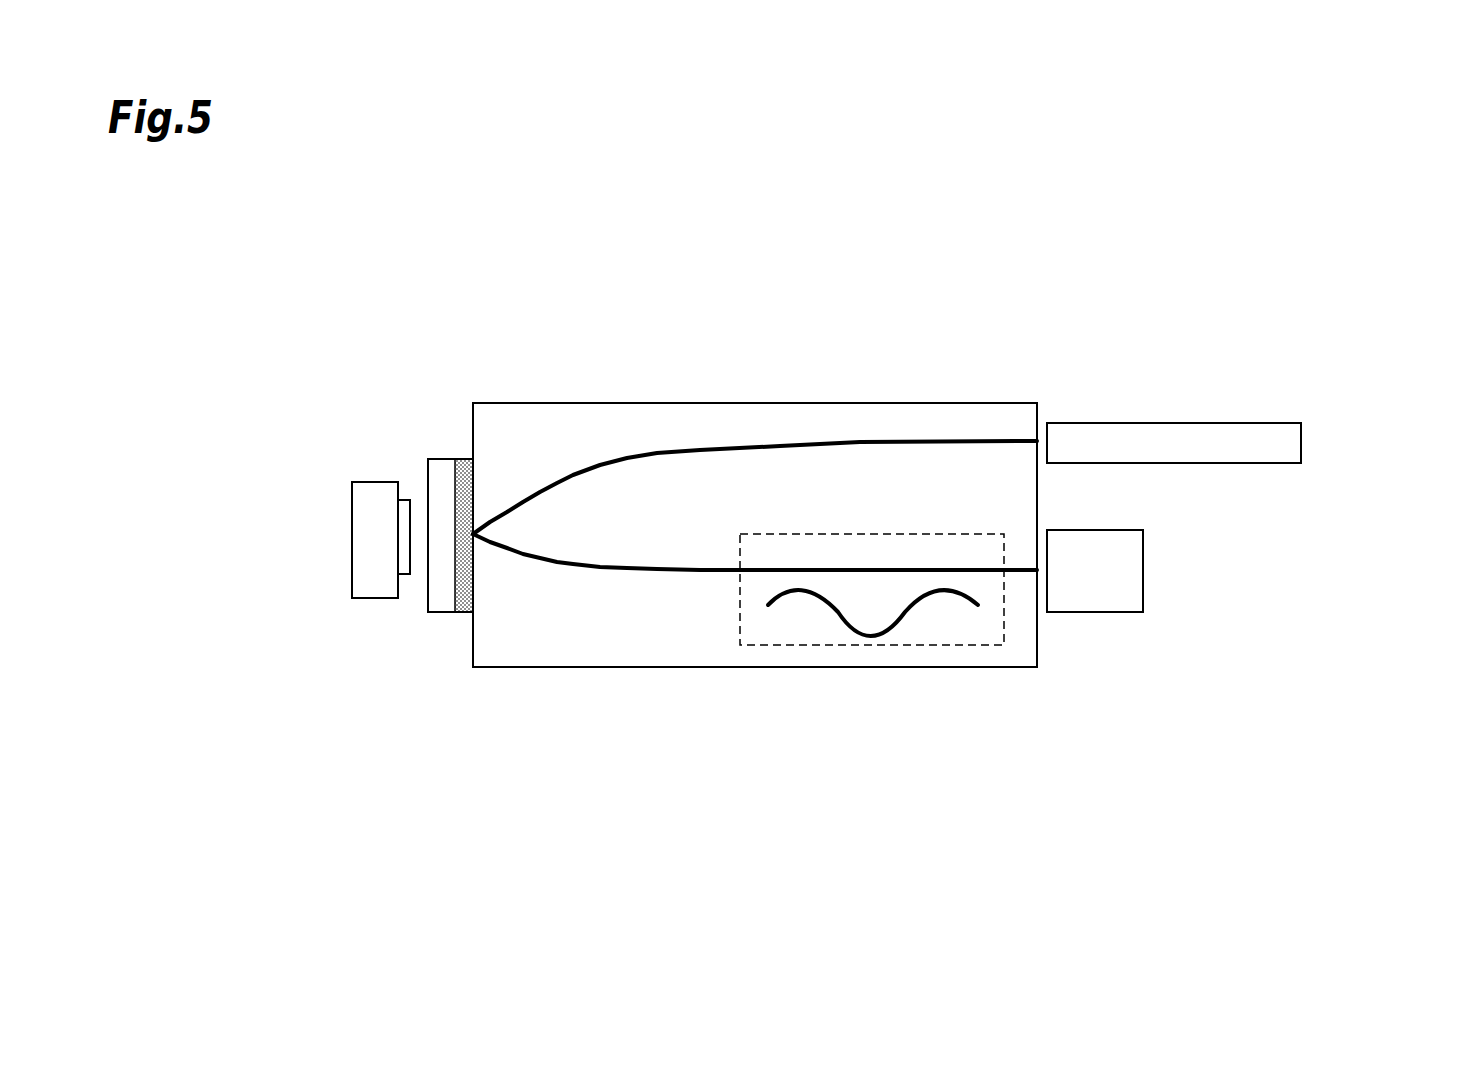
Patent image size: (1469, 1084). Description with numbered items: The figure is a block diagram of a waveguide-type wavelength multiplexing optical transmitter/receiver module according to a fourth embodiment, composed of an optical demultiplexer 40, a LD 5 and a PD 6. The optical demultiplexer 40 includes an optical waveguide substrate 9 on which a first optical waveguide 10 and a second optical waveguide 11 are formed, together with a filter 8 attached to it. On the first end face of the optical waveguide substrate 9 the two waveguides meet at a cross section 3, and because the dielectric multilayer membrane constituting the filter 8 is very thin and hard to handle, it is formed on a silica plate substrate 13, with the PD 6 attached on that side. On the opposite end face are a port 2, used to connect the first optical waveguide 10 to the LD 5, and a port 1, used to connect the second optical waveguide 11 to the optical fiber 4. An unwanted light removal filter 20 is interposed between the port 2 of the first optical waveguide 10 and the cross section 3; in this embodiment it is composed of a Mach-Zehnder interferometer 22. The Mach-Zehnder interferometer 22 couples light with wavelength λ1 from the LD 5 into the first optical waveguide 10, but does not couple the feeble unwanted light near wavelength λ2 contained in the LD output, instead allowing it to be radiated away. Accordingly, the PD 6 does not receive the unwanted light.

The port 1 is at (1050, 384).
The port 2 is at (1084, 636).
The cross section 3 is at (626, 421).
The optical fiber 4 is at (1248, 383).
The LD 5 is at (1253, 571).
The PD 6 is at (391, 627).
The filter 8 is at (517, 426).
The optical waveguide substrate 9 is at (755, 663).
The first optical waveguide 10 is at (786, 667).
The second optical waveguide 11 is at (877, 400).
The silica plate substrate 13 is at (367, 458).
The unwanted light removal filter 20 is at (1044, 554).
The Mach-Zehnder interferometer 22 is at (1078, 672).
The optical demultiplexer 40 is at (787, 770).